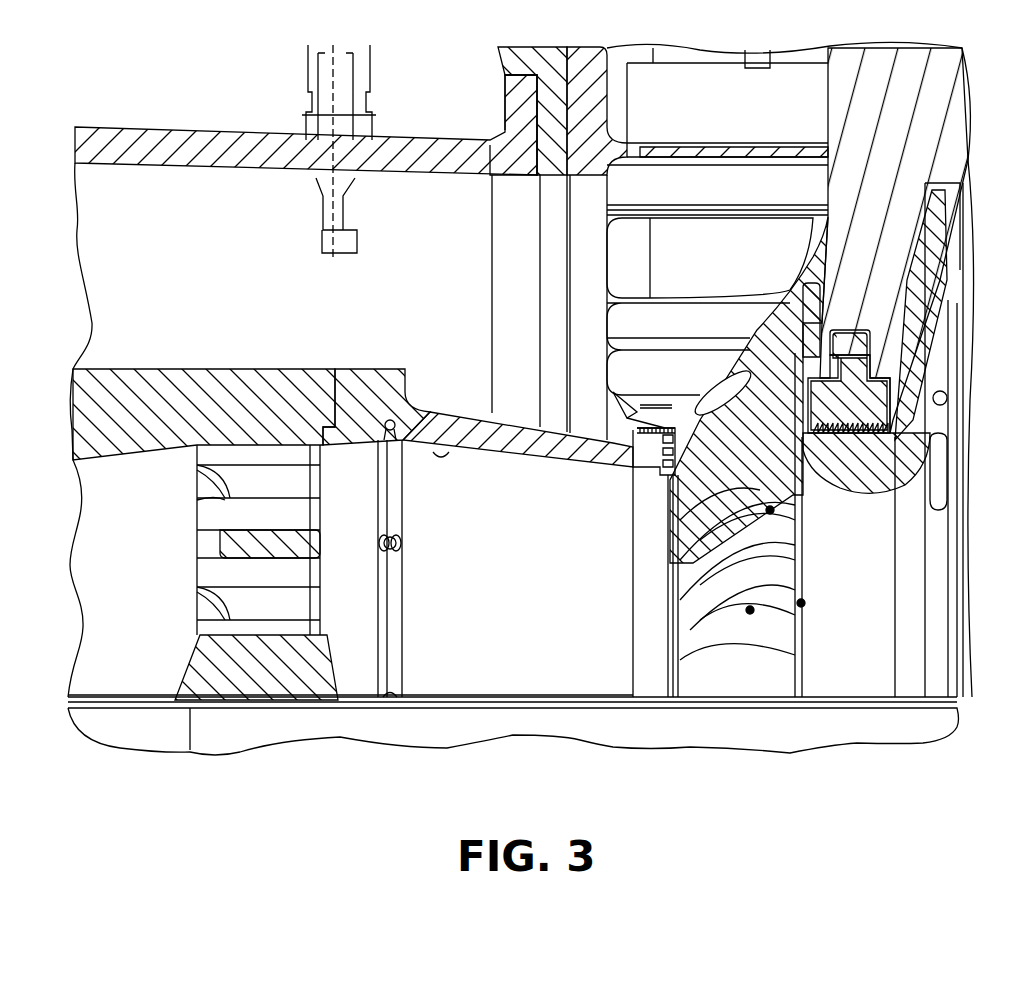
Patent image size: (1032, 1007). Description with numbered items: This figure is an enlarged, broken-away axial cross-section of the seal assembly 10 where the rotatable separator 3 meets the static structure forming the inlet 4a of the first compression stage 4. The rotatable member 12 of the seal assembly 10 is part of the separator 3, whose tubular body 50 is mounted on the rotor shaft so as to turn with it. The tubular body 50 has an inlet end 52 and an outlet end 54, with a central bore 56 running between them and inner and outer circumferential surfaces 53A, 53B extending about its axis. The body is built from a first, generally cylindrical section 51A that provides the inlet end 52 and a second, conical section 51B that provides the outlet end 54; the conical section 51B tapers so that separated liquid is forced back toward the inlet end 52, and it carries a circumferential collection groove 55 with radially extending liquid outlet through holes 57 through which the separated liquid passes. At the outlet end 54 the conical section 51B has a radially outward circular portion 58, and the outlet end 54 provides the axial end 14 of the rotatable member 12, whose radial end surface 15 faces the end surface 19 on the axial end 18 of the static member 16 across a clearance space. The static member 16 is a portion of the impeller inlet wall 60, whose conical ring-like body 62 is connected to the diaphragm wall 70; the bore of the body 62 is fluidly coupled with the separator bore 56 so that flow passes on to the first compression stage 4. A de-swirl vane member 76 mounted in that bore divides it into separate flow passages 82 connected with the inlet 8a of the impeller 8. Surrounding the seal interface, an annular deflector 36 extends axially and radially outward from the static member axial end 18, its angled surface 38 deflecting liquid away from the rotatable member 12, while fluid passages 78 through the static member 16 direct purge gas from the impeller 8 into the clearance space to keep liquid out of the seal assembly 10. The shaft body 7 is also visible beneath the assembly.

The rotatable separator 3 is at (255, 258).
The first compression stage 4 is at (892, 702).
The inlet 4a is at (633, 652).
The shaft body 7 is at (610, 735).
The impeller 8 is at (952, 503).
The inlet of the impeller 8a is at (804, 603).
The seal assembly 10 is at (637, 380).
The rotatable member 12 is at (135, 325).
The axial end 14 is at (655, 465).
The end surface 15 is at (680, 455).
The static member 16 is at (700, 345).
The axial end 18 is at (679, 424).
The end surface 19 is at (660, 452).
The deflector 36 is at (613, 410).
The angled surface 38 is at (630, 420).
The tubular body 50 is at (353, 485).
The cylindrical section 51A is at (183, 390).
The conical section 51B is at (517, 433).
The inlet end 52 is at (648, 675).
The inner circumferential surface 53A is at (547, 458).
The outer circumferential surface 53B is at (478, 405).
The outlet end 54 is at (676, 662).
The collection groove 55 is at (392, 630).
The central bore 56 is at (452, 448).
The liquid outlet through holes 57 is at (391, 432).
The circular portion 58 is at (645, 628).
The impeller inlet wall 60 is at (752, 328).
The ring-like body 62 is at (740, 345).
The diaphragm wall 70 is at (855, 130).
The de-swirl vane member 76 is at (787, 527).
The fluid passages 78 is at (740, 518).
The flow passages 82 is at (773, 510).